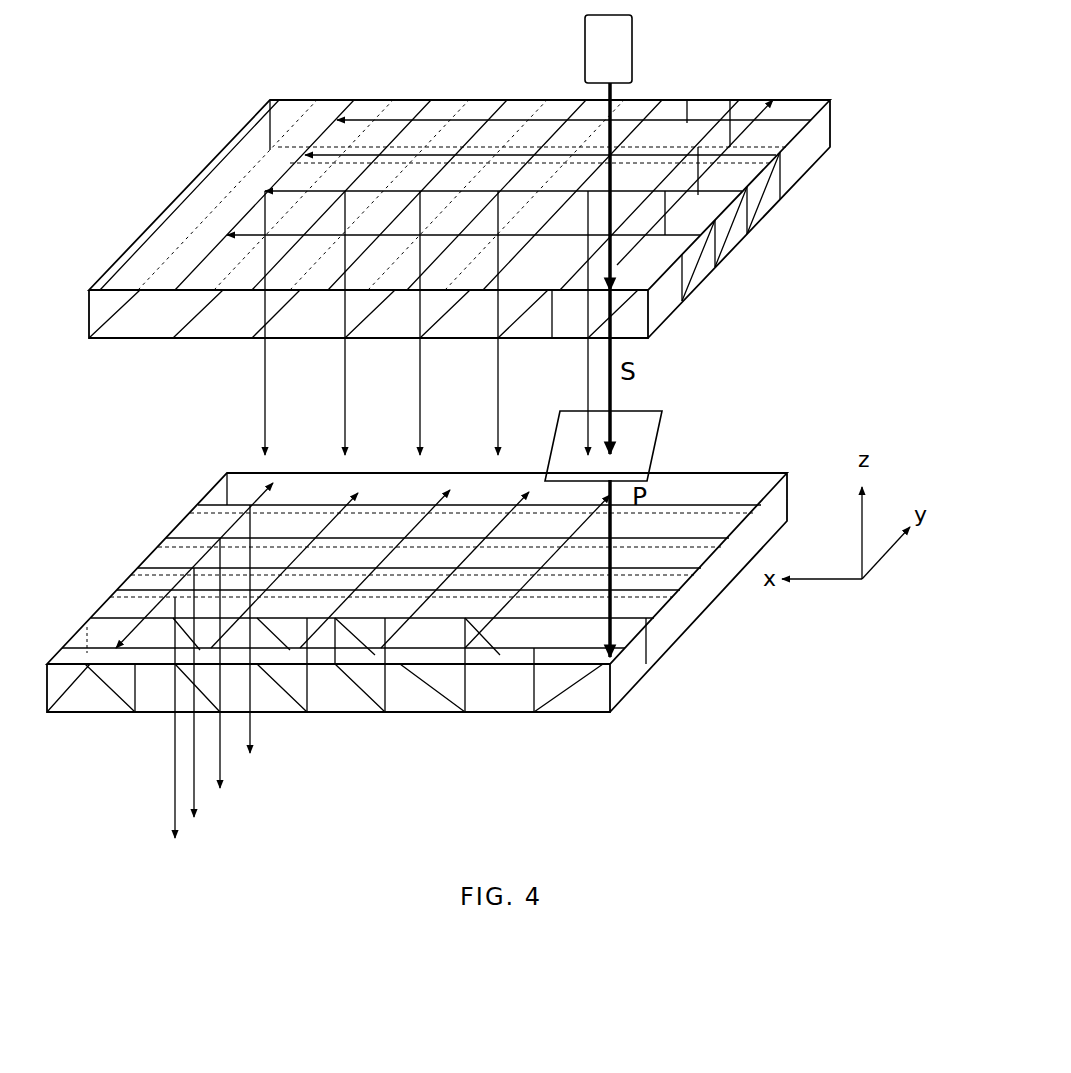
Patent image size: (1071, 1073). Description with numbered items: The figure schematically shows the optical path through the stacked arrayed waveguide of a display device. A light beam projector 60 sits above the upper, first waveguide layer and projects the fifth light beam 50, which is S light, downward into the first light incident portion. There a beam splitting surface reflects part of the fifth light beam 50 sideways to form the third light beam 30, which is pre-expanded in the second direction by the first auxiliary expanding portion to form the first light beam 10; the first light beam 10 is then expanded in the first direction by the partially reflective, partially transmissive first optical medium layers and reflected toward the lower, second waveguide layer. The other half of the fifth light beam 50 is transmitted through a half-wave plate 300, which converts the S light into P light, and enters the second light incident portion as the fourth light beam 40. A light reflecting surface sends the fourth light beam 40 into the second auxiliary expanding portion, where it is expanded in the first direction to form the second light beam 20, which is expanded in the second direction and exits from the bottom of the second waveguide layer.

The first light beam 10 is at (687, 122).
The second light beam 20 is at (481, 633).
The third light beam 30 is at (645, 253).
The fourth light beam 40 is at (542, 658).
The fifth light beam 50 is at (600, 130).
The light beam projector 60 is at (632, 61).
The half-wave plate 300 is at (662, 431).